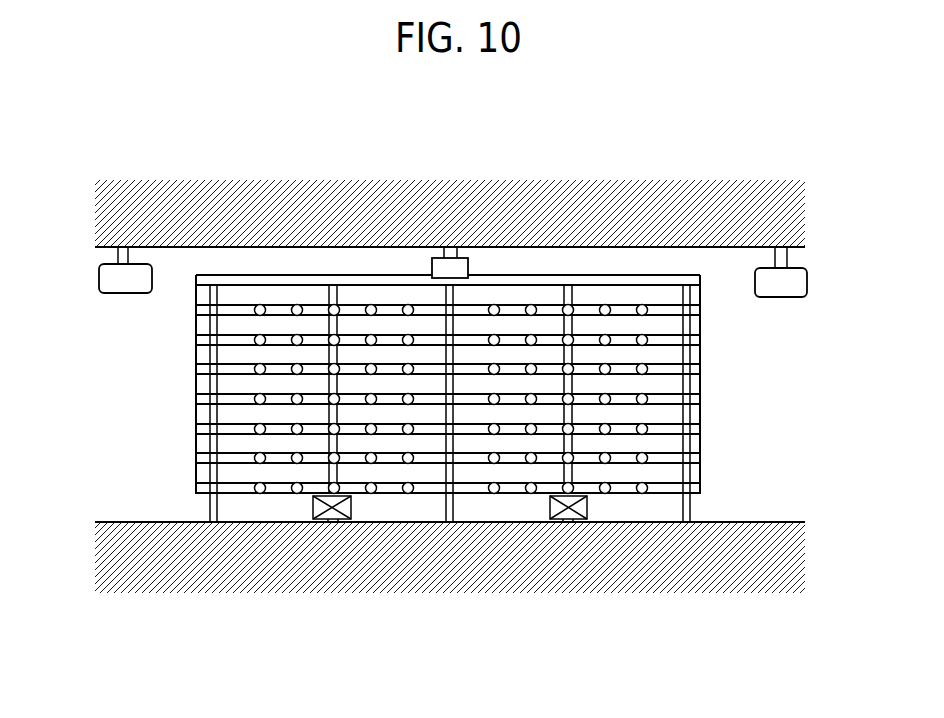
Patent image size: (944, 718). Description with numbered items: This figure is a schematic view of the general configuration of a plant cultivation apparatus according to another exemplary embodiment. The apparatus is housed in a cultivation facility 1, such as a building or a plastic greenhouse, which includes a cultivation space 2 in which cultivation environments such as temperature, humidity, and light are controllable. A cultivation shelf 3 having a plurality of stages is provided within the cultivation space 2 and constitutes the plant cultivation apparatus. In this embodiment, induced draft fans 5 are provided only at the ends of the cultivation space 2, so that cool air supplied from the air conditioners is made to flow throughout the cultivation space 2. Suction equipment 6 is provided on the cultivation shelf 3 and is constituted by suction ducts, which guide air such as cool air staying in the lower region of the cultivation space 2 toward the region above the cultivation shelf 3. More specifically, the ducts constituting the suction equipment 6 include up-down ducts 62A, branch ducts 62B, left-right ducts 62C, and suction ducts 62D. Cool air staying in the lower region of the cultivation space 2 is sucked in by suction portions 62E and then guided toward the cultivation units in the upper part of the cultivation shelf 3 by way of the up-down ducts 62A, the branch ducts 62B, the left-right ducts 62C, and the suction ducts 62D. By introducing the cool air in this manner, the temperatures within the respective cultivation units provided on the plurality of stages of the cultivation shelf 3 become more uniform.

The cultivation facility 1 is at (450, 184).
The cultivation space 2 is at (448, 198).
The cultivation shelf 3 is at (431, 200).
The induced draft fan 5 is at (453, 300).
The suction equipment 6 is at (448, 464).
The up-down duct 62A is at (247, 471).
The branch duct 62B is at (460, 219).
The left-right duct 62C is at (259, 204).
The suction duct 62D is at (426, 218).
The suction portion 62E is at (450, 577).